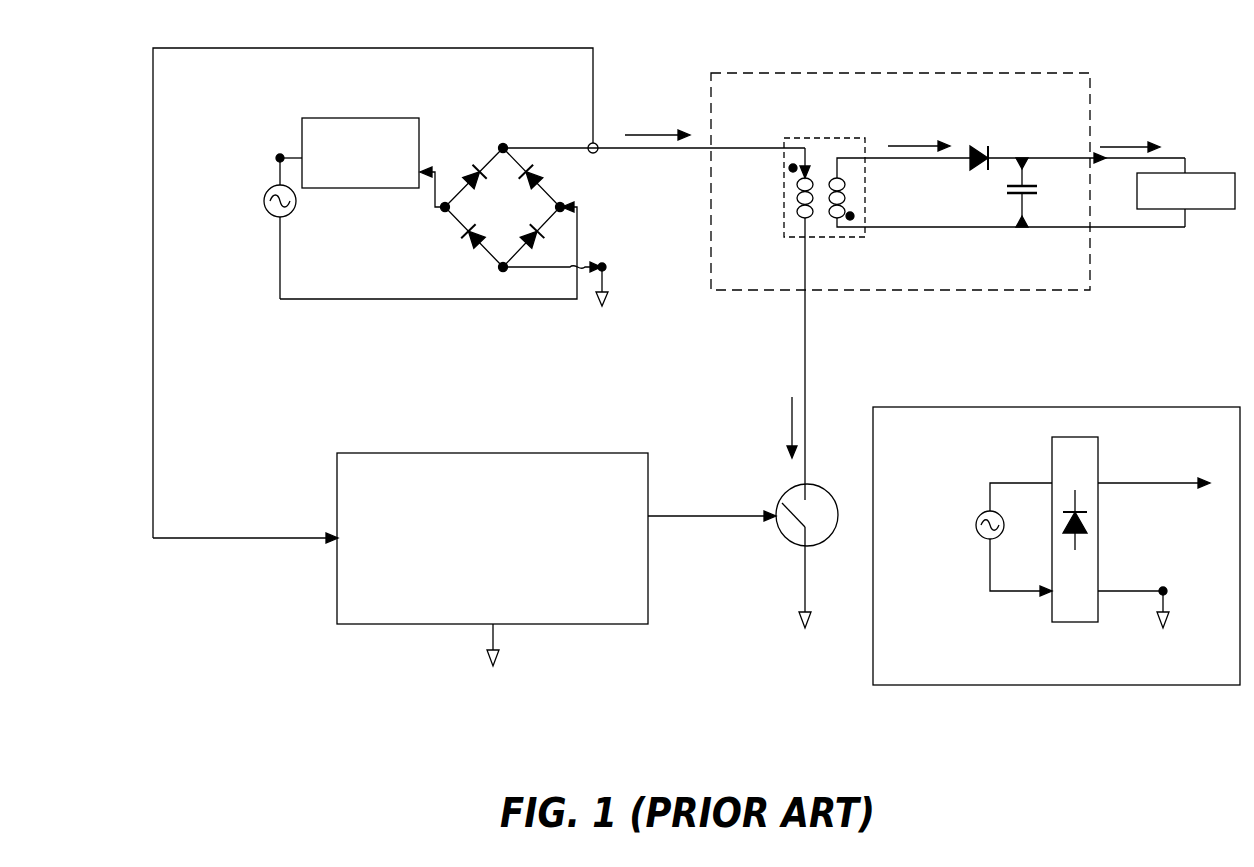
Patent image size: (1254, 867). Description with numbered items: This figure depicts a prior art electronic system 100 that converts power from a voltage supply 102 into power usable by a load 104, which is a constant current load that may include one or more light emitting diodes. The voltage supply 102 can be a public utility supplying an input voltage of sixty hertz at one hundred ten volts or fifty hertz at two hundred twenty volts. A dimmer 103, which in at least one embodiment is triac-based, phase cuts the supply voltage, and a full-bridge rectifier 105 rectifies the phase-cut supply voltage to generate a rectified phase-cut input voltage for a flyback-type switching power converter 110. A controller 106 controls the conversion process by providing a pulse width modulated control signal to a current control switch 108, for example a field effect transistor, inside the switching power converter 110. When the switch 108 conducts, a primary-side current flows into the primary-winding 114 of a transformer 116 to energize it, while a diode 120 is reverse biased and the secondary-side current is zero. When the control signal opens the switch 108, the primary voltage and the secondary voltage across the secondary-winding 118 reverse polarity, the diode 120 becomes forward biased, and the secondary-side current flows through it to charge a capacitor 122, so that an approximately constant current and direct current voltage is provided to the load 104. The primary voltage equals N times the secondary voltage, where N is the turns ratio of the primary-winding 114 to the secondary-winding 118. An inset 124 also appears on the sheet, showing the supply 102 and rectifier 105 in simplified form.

The electronic system 100 is at (1168, 106).
The voltage supply 102 is at (272, 214).
The dimmer 103 is at (373, 162).
The load 104 is at (1215, 209).
The full-bridge rectifier 105 is at (1105, 652).
The controller 106 is at (556, 578).
The current control switch 108 is at (783, 492).
The flyback-type switching power converter 110 is at (711, 97).
The primary-winding 114 is at (798, 224).
The transformer 116 is at (961, 180).
The secondary-winding 118 is at (855, 216).
The diode 120 is at (972, 146).
The capacitor 122 is at (1030, 190).
The simplified rectifier circuit 124 is at (965, 407).